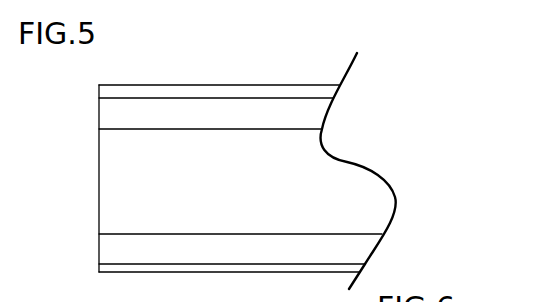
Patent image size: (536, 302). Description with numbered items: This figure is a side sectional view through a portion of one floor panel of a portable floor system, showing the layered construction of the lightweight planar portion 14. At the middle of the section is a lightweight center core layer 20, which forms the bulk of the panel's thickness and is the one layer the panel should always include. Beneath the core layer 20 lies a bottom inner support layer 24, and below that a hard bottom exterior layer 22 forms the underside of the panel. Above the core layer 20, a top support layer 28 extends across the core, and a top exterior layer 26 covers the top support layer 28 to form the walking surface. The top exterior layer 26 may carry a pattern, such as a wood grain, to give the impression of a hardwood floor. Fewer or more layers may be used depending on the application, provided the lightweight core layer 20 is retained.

The planar portion 14 is at (414, 78).
The center core layer 20 is at (108, 161).
The bottom exterior layer 22 is at (105, 272).
The bottom inner support layer 24 is at (107, 251).
The top exterior layer 26 is at (158, 90).
The top support layer 28 is at (105, 112).